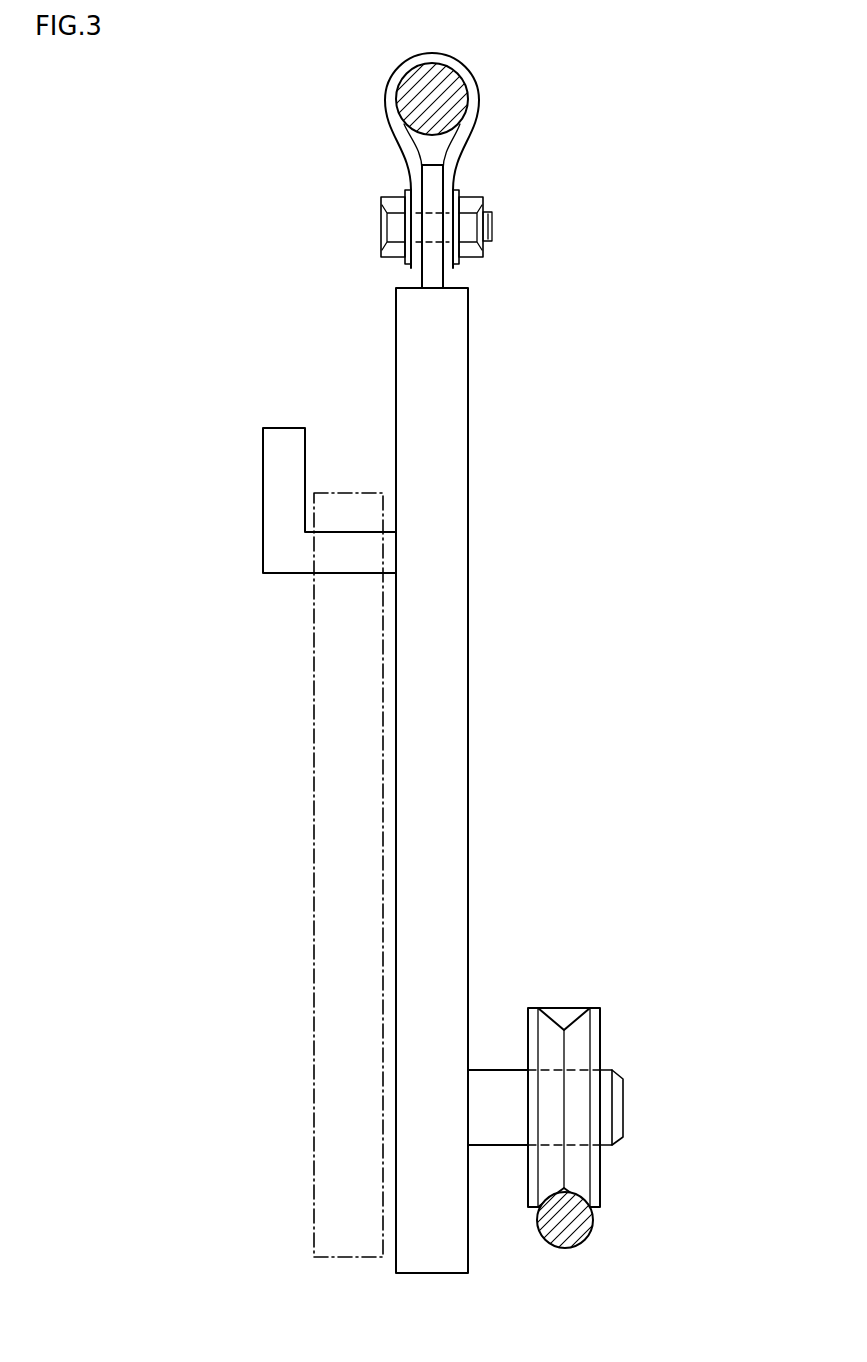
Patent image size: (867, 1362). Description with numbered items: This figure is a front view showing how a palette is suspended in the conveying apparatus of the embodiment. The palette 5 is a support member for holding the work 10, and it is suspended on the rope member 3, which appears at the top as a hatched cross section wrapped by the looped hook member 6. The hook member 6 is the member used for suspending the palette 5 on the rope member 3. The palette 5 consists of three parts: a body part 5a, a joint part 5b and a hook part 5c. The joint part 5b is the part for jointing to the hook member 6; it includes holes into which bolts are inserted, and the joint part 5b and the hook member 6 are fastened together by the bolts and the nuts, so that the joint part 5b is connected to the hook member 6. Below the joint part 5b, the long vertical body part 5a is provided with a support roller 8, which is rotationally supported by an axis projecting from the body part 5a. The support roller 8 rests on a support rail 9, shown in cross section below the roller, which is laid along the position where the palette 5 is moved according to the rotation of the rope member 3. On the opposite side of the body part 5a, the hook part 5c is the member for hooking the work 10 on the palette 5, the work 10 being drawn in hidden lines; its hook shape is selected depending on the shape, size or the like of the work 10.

The rope member 3 is at (410, 155).
The palette 5 is at (416, 719).
The body part 5a is at (433, 877).
The joint part 5b is at (434, 278).
The hook part 5c is at (285, 428).
The hook member 6 is at (513, 138).
The support roller 8 is at (602, 1043).
The support rail 9 is at (592, 1222).
The work 10 is at (314, 873).